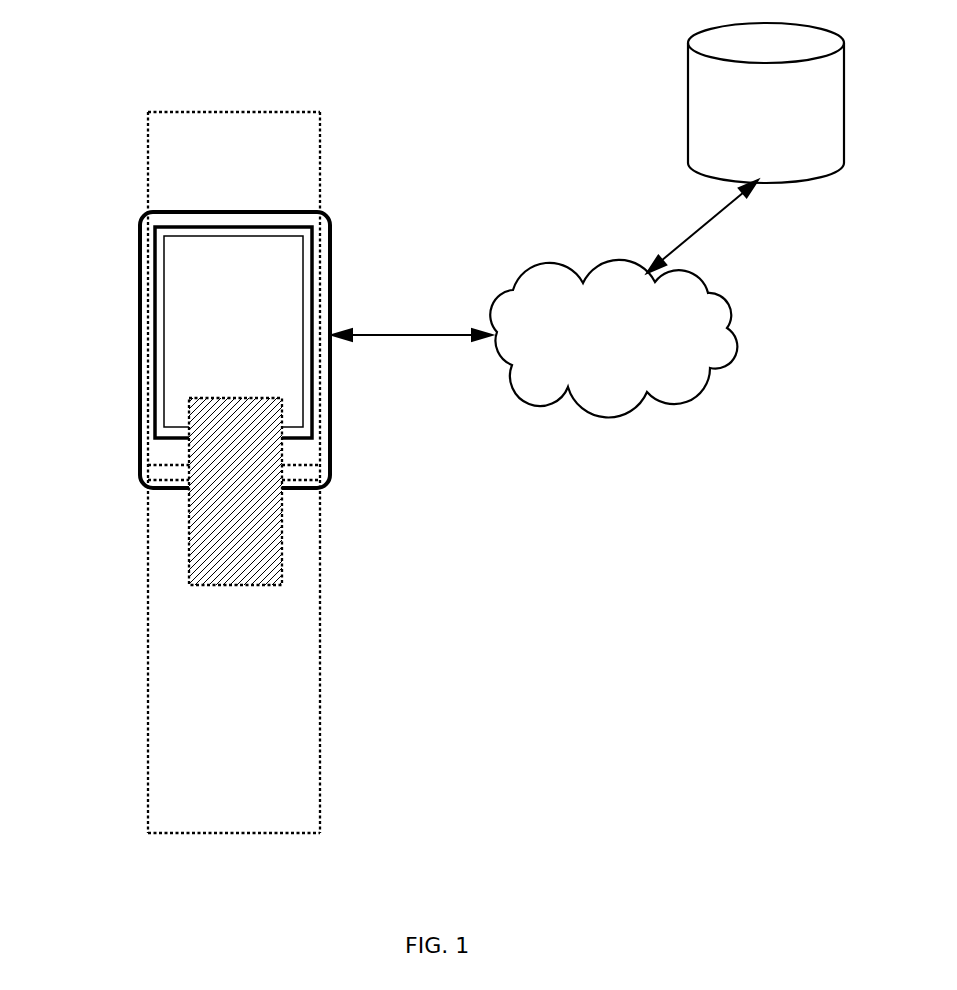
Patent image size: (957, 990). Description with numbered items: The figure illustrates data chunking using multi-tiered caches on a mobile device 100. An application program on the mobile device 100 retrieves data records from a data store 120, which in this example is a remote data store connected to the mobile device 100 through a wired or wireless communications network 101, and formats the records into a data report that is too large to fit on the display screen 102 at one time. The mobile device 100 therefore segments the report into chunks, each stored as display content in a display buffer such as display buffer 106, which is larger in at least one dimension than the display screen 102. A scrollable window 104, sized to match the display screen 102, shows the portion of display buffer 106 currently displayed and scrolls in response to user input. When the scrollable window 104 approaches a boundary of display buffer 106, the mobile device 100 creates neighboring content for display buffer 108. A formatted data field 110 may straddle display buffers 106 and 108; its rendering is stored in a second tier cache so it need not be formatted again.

The mobile device 100 is at (330, 242).
The communications network 101 is at (613, 339).
The display screen 102 is at (312, 303).
The scrollable window 104 is at (167, 288).
The display buffer 106 is at (320, 112).
The display buffer 108 is at (320, 648).
The data field 110 is at (282, 523).
The data store 120 is at (766, 103).